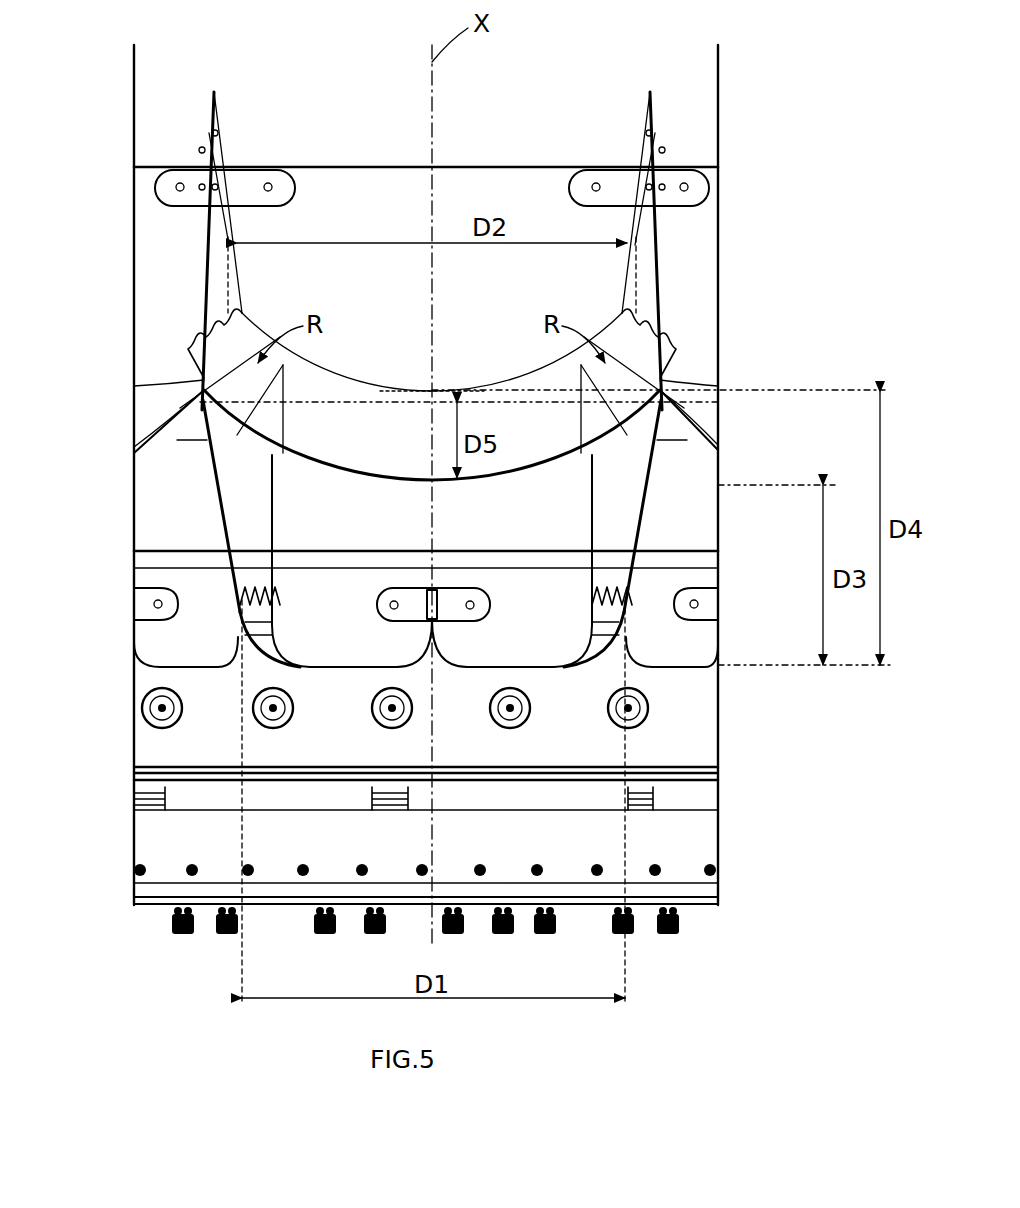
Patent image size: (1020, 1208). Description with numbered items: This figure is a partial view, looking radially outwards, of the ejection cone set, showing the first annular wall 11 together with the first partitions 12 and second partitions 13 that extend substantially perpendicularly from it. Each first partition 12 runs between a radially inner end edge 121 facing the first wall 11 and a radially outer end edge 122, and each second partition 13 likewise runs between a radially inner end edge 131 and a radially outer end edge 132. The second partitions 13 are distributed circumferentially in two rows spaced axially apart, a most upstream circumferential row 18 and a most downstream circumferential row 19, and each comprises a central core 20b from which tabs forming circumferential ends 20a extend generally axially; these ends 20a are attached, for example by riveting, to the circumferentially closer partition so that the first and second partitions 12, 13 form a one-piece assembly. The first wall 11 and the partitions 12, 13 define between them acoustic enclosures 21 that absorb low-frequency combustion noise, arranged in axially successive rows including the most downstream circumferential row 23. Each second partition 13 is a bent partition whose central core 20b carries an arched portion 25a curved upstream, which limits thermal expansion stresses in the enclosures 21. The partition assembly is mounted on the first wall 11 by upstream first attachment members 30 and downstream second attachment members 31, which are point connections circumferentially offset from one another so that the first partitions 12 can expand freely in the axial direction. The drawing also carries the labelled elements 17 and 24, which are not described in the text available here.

The first annular wall 11 is at (555, 522).
The first partitions 12 is at (210, 262).
The second partitions 13 is at (318, 436).
The bottom plate 17 is at (705, 905).
The most upstream circumferential row 18 is at (125, 667).
The most downstream circumferential row 19 is at (125, 390).
The circumferential ends 20a is at (243, 328).
The central core 20b is at (350, 405).
The acoustic enclosures 21 is at (486, 305).
The most downstream circumferential row of acoustic enclosures 23 is at (730, 551).
The side wall 24 is at (123, 225).
The arched portion 25a is at (440, 482).
The first attachment members 30 is at (380, 598).
The second attachment members 31 is at (160, 186).
The radially inner end edge of the first partitions 121 is at (633, 638).
The radially outer end edge of the first partitions 122 is at (640, 690).
The radially inner end edge of the second partitions 131 is at (525, 370).
The radially outer end edge of the second partitions 132 is at (693, 447).